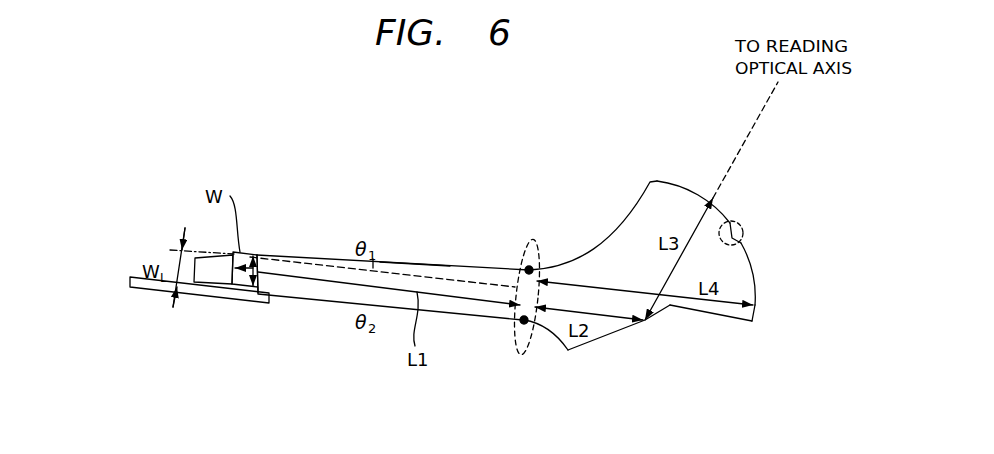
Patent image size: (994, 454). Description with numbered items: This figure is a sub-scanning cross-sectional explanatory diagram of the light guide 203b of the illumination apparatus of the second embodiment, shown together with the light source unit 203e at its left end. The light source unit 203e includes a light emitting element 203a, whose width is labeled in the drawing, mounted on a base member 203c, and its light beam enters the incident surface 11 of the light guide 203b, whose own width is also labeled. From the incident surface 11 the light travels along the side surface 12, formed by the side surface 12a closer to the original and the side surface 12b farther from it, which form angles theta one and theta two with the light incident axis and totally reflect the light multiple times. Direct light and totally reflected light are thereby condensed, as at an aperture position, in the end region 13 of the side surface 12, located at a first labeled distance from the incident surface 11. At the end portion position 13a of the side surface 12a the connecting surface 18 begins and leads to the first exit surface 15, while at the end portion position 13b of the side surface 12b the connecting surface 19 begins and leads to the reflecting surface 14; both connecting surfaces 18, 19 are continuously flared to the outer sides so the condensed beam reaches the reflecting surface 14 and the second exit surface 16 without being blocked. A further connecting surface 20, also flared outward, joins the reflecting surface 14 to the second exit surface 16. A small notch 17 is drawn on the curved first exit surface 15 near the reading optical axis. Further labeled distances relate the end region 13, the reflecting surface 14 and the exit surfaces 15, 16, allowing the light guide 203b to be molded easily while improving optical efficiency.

The incident surface 11 is at (236, 290).
The side surface 12 is at (354, 193).
The side surface closer to the original surface 12a is at (328, 257).
The side surface farther from the original surface 12b is at (280, 257).
The end region of the side surface 13 is at (533, 240).
The end portion position of side surface 12a 13a is at (528, 268).
The end portion position of side surface 12b 13b is at (522, 322).
The reflecting surface 14 is at (643, 326).
The first exit surface 15 is at (703, 193).
The second exit surface 16 is at (759, 311).
The notch 17 is at (743, 229).
The connecting surface 18 is at (613, 248).
The connecting surface 19 is at (552, 335).
The connecting surface 20 is at (723, 317).
The light emitting element 203a is at (212, 270).
The light guide 203b is at (413, 262).
The base plate 203c is at (199, 323).
The light source unit 203e is at (167, 288).